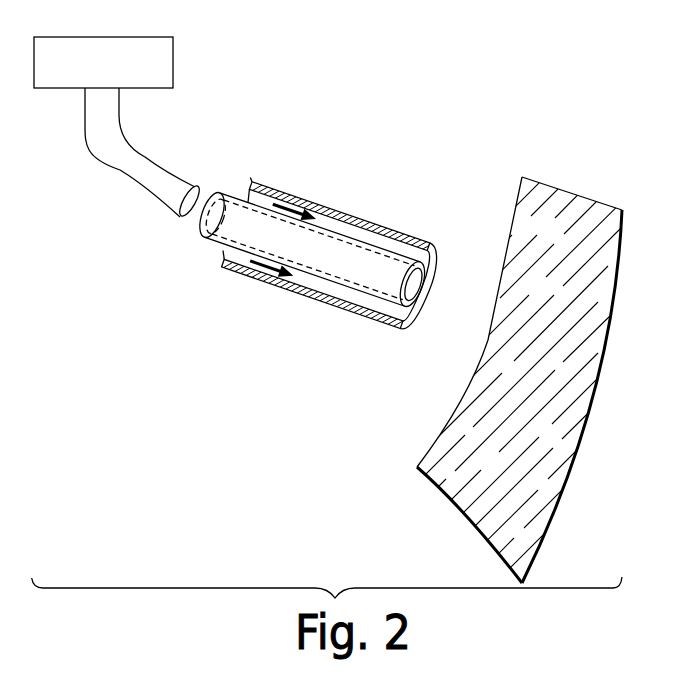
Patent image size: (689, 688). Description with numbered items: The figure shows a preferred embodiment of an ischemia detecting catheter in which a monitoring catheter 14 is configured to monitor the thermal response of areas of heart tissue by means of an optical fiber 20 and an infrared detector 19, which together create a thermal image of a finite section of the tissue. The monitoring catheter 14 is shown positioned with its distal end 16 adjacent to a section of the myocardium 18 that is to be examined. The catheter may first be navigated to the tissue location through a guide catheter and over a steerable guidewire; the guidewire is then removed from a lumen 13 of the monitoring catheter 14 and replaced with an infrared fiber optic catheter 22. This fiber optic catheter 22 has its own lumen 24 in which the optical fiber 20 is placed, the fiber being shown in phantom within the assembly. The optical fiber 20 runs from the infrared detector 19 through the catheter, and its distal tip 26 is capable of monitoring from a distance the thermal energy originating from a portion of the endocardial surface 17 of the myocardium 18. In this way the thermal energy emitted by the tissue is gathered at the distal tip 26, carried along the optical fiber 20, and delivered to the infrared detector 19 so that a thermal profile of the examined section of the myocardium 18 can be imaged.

The lumen 13 is at (334, 219).
The monitoring catheter 14 is at (283, 288).
The distal end 16 is at (438, 247).
The endocardial surface 17 is at (453, 408).
The myocardium 18 is at (561, 202).
The infrared detector 19 is at (170, 64).
The optical fiber 20 is at (137, 146).
The infrared fiber optic catheter 22 is at (217, 240).
The lumen 24 is at (385, 293).
The distal tip 26 is at (426, 298).